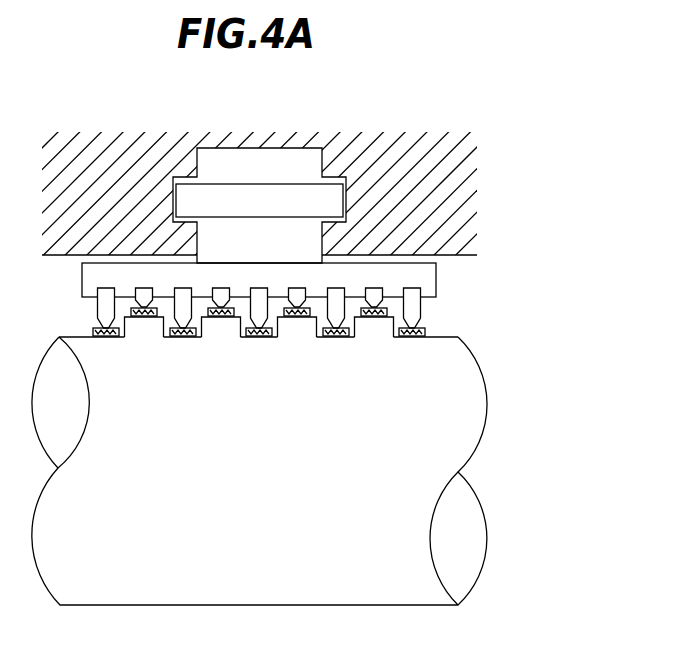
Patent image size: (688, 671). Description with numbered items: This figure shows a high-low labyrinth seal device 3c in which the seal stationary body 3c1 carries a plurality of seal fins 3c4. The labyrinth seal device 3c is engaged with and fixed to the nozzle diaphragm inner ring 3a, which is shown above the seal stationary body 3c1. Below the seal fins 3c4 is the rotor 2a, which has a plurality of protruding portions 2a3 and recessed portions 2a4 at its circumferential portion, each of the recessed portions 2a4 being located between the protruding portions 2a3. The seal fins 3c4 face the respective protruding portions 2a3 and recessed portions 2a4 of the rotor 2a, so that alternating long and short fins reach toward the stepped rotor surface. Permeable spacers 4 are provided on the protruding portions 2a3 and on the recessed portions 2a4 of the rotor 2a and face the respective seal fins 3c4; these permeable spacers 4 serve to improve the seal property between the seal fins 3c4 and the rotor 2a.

The nozzle diaphragm inner ring 3a is at (112, 148).
The high-low labyrinth seal device 3c is at (329, 291).
The seal stationary body 3c1 is at (427, 280).
The seal fins 3c4 is at (416, 312).
The permeable spacers 4 is at (93, 328).
The rotor 2a is at (286, 461).
The protruding portions 2a3 is at (297, 328).
The recessed portions 2a4 is at (255, 338).